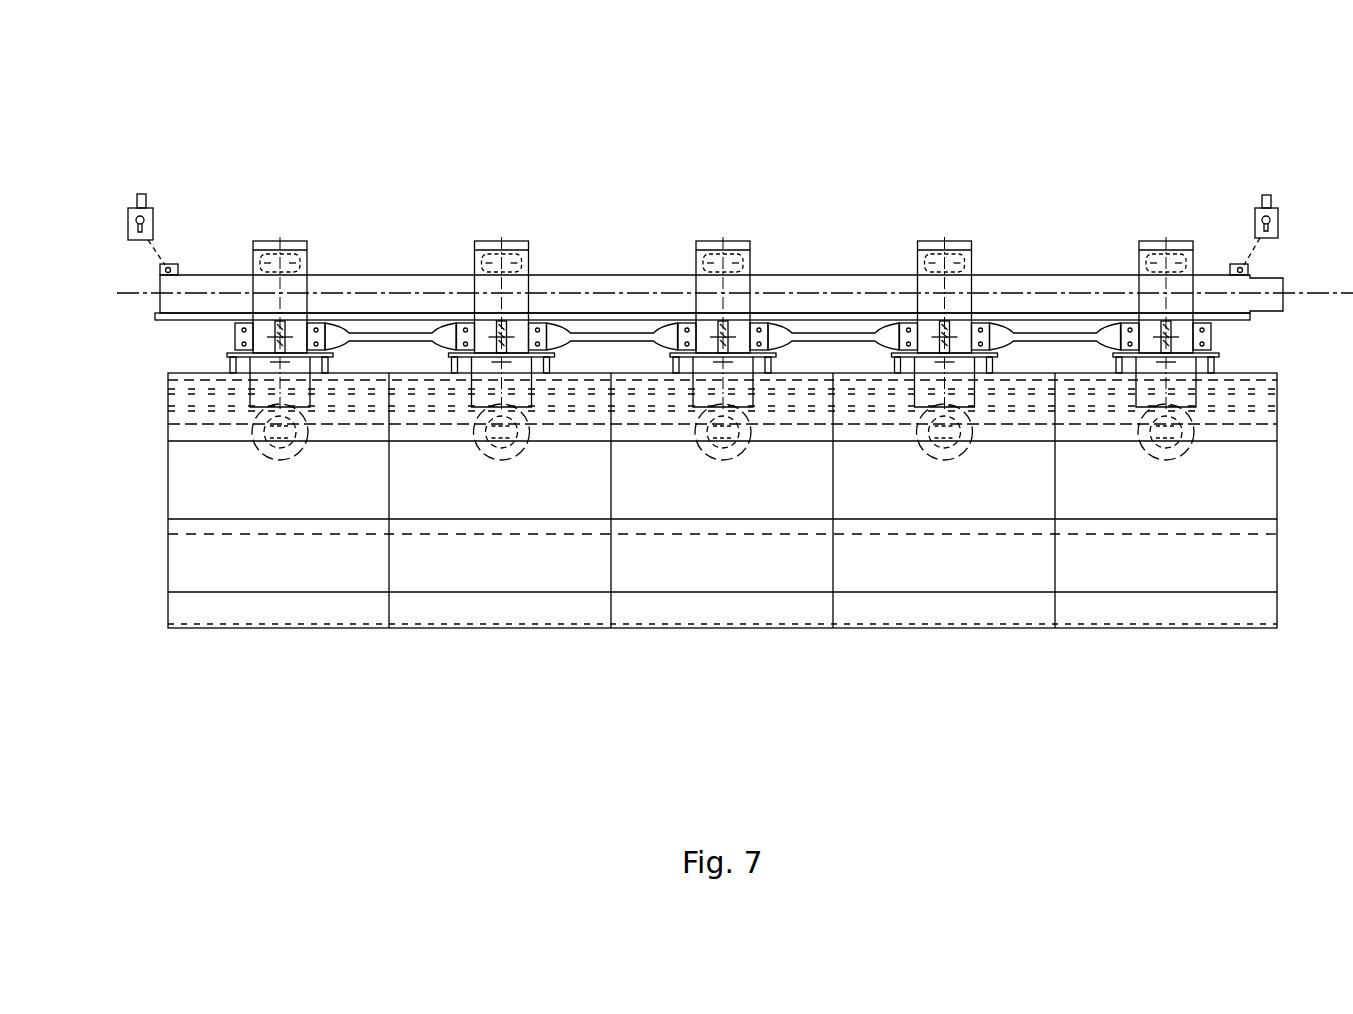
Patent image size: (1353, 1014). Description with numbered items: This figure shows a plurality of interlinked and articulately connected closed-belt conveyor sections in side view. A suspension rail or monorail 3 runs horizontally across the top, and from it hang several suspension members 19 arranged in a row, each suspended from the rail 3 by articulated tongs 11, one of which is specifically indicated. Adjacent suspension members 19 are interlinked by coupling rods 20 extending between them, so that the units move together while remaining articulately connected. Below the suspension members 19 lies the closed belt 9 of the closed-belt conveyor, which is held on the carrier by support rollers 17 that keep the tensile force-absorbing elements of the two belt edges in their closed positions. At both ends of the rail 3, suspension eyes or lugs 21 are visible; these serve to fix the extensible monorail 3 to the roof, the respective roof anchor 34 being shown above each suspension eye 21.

The rail 3 is at (810, 287).
The closed belt 9 is at (312, 607).
The articulated tongs 11 is at (1145, 288).
The support roller 17 is at (272, 449).
The suspension member 19 is at (272, 210).
The coupling rod 20 is at (364, 333).
The suspension eye 21 is at (171, 264).
The roof anchor 34 is at (128, 215).